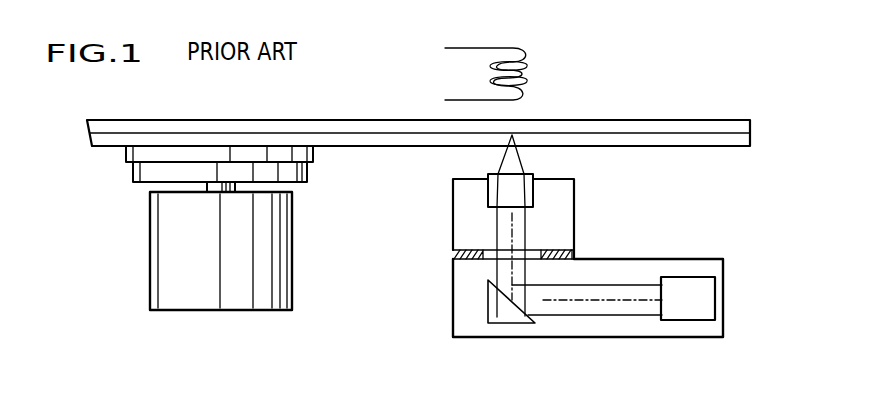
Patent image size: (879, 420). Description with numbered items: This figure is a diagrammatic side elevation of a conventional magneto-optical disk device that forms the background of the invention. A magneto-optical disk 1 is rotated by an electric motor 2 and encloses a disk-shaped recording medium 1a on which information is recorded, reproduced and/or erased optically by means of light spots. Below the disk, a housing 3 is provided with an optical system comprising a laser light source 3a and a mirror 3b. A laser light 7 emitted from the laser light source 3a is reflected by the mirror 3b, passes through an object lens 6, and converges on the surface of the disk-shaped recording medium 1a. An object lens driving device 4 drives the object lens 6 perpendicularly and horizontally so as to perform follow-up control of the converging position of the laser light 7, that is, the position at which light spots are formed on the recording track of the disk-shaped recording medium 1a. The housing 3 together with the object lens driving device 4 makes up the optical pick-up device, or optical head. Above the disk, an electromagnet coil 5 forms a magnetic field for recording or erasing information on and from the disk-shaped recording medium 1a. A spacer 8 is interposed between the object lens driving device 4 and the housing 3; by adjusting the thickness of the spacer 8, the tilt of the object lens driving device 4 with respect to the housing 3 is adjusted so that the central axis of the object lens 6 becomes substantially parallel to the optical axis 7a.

The magneto-optical disk 1 is at (665, 118).
The disk-shaped recording medium 1a is at (560, 134).
The electric motor 2 is at (152, 288).
The housing 3 is at (676, 259).
The laser light source 3a is at (680, 311).
The mirror 3b is at (512, 320).
The object lens driving device 4 is at (575, 206).
The electromagnet coil 5 is at (527, 49).
The object lens 6 is at (488, 200).
The laser light 7 is at (567, 316).
The optical axis 7a is at (510, 218).
The spacer 8 is at (575, 253).